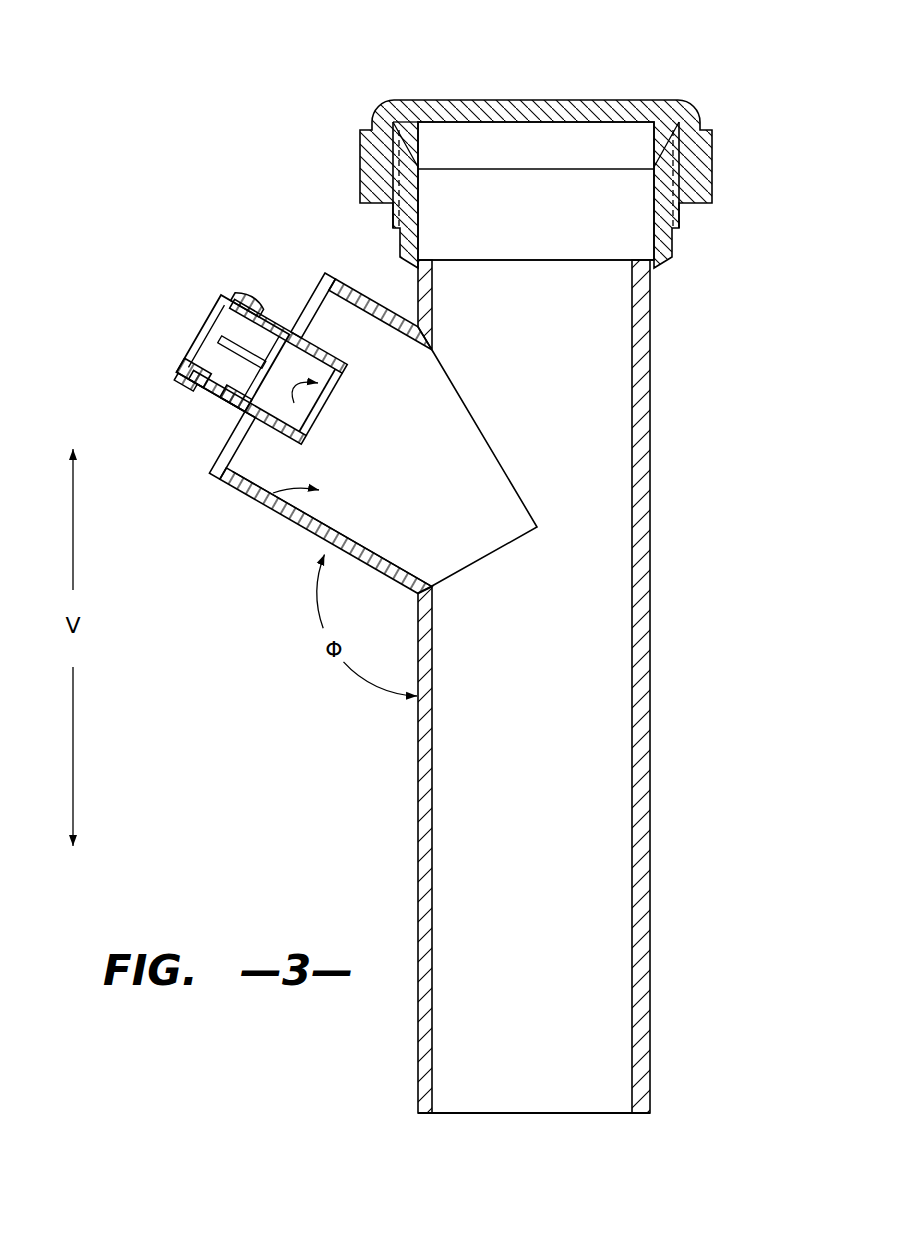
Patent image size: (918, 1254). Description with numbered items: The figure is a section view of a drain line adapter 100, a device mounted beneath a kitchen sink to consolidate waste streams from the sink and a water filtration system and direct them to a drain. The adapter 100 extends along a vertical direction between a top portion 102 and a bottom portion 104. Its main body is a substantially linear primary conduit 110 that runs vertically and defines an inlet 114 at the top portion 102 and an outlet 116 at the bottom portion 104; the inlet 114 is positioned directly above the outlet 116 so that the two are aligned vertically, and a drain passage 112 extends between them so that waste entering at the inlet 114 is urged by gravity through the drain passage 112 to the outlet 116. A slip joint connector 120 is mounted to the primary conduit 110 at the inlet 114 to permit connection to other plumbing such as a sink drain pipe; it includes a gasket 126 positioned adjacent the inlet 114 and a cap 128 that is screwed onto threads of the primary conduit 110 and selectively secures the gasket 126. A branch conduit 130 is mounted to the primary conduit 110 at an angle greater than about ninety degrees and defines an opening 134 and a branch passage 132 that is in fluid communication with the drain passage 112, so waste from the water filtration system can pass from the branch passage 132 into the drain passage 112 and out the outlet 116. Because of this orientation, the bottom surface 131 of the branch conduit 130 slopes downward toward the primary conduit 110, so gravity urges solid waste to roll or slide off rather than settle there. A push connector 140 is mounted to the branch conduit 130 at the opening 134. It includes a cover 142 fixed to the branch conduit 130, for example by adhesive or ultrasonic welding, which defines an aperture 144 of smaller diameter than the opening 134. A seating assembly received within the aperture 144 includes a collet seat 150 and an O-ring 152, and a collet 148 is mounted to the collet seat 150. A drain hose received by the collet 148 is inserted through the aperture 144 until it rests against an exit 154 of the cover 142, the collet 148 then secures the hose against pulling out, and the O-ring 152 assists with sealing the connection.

The drain line adapter 100 is at (157, 150).
The top portion 102 is at (312, 138).
The bottom portion 104 is at (396, 1112).
The primary conduit 110 is at (649, 772).
The drain passage 112 is at (561, 701).
The inlet 114 is at (518, 140).
The outlet 116 is at (478, 1119).
The slip joint connector 120 is at (709, 111).
The gasket 126 is at (420, 141).
The cap 128 is at (402, 108).
The branch conduit 130 is at (333, 535).
The bottom surface 131 is at (374, 547).
The branch passage 132 is at (273, 502).
The opening 134 is at (228, 458).
The push connector 140 is at (298, 306).
The cover 142 is at (333, 350).
The aperture 144 is at (210, 346).
The collet 148 is at (208, 325).
The collet seat 150 is at (190, 380).
The O-ring 152 is at (242, 418).
The exit 154 is at (318, 410).